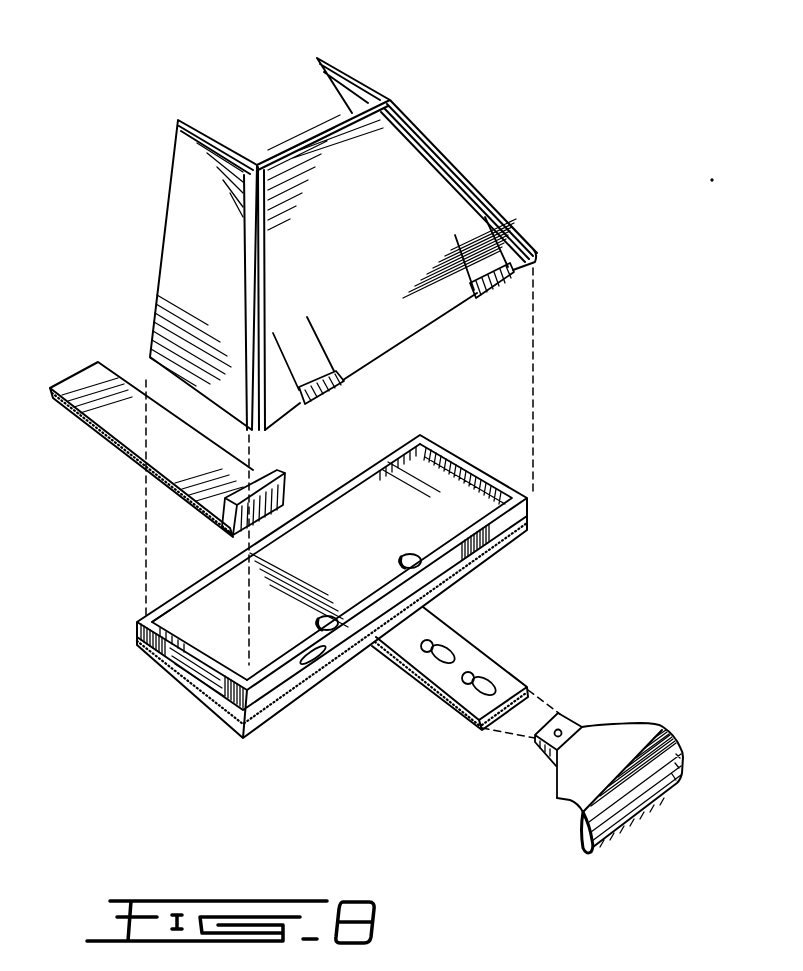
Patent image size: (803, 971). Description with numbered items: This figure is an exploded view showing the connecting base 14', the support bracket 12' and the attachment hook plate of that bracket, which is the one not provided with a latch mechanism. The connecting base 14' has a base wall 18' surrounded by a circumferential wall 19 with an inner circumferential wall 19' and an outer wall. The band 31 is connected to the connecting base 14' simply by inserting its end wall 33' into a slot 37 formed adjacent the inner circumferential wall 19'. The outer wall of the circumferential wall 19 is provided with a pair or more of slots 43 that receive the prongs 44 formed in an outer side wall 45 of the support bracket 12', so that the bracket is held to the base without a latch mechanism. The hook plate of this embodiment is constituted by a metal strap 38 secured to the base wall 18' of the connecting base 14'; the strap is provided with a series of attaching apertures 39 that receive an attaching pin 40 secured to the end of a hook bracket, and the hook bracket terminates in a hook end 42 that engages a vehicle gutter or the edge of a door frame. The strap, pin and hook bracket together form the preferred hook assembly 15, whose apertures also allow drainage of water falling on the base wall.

The support bracket 12' is at (231, 237).
The outer side wall 45 is at (438, 180).
The prongs 44 is at (487, 292).
The band 31 is at (93, 400).
The end wall 33' is at (286, 485).
The connecting base 14' is at (332, 626).
The base wall 18' is at (234, 706).
The circumferential wall 19 is at (173, 677).
The inner circumferential wall 19' is at (296, 533).
The slots 43 is at (475, 545).
The slot 37 is at (310, 526).
The metal strap 38 is at (440, 680).
The attaching apertures 39 is at (487, 677).
The attaching pin 40 is at (550, 757).
The hook end 42 is at (578, 850).
The hook assembly 15 is at (598, 674).